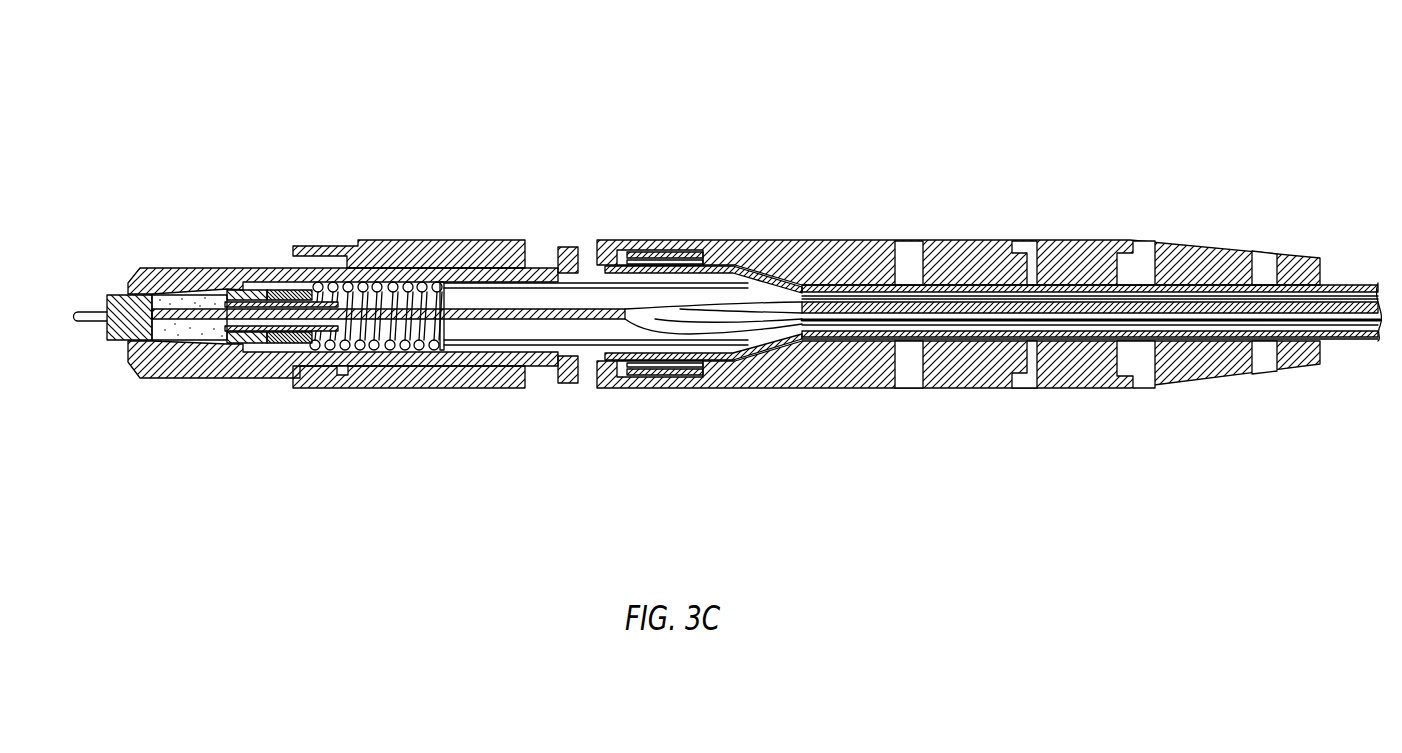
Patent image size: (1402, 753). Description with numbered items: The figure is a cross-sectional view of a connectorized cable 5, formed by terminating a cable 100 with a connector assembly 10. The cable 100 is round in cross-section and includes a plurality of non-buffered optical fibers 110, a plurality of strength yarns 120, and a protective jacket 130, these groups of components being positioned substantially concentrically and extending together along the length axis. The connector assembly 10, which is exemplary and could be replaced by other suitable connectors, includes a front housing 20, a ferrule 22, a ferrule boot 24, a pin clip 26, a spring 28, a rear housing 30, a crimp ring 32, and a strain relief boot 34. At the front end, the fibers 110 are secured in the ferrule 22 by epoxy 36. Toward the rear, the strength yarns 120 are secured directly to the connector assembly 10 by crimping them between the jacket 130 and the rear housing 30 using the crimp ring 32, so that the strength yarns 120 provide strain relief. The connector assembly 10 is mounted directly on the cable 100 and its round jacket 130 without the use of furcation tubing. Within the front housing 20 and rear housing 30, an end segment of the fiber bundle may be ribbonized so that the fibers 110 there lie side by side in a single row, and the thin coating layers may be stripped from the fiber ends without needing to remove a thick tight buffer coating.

The connectorized cable 5 is at (790, 98).
The connector assembly 10 is at (522, 167).
The front housing 20 is at (218, 275).
The ferrule 22 is at (137, 365).
The ferrule boot 24 is at (296, 380).
The pin clip 26 is at (95, 302).
The spring 28 is at (401, 290).
The rear housing 30 is at (645, 372).
The crimp ring 32 is at (686, 366).
The strain relief boot 34 is at (982, 240).
The epoxy 36 is at (180, 285).
The cable 100 is at (1354, 272).
The non-buffered optical fibers 110 is at (520, 292).
The strength yarns 120 is at (758, 338).
The protective jacket 130 is at (765, 267).